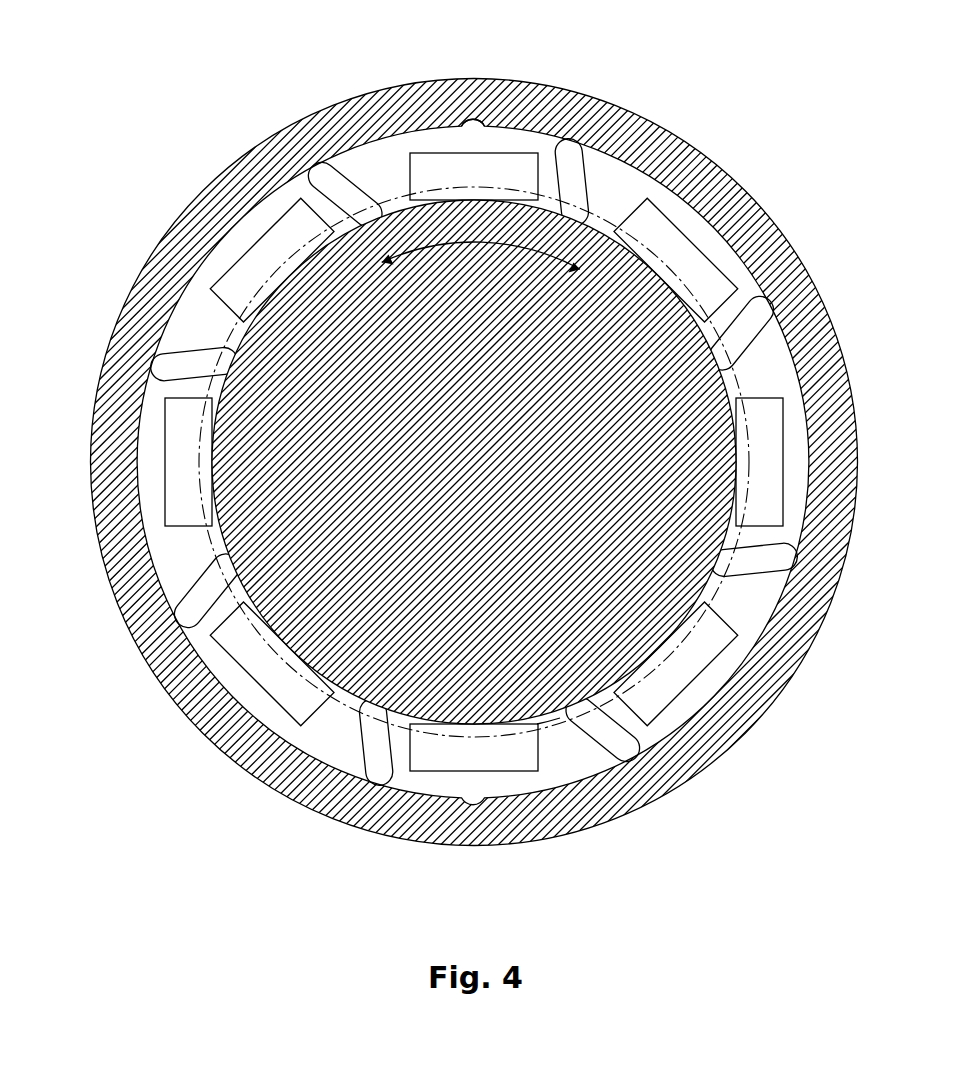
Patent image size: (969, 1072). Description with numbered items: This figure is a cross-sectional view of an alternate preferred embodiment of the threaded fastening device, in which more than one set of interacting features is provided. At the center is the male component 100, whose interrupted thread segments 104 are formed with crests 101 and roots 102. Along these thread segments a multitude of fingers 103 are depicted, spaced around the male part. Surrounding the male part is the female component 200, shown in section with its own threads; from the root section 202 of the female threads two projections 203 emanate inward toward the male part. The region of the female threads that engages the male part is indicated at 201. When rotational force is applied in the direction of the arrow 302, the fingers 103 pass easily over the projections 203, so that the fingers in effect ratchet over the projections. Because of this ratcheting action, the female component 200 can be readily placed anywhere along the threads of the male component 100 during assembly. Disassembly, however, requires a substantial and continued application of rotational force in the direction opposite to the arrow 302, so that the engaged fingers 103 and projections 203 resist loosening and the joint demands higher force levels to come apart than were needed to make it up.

The male component 100 is at (693, 585).
The crests 101 is at (690, 692).
The roots 102 is at (541, 718).
The fingers 103 is at (378, 780).
The interrupted thread segments 104 is at (780, 462).
The female component 200 is at (188, 702).
The stator tooth portion 201 is at (200, 540).
The root section 202 is at (128, 479).
The projections 203 is at (473, 126).
The arrow 302 is at (412, 251).